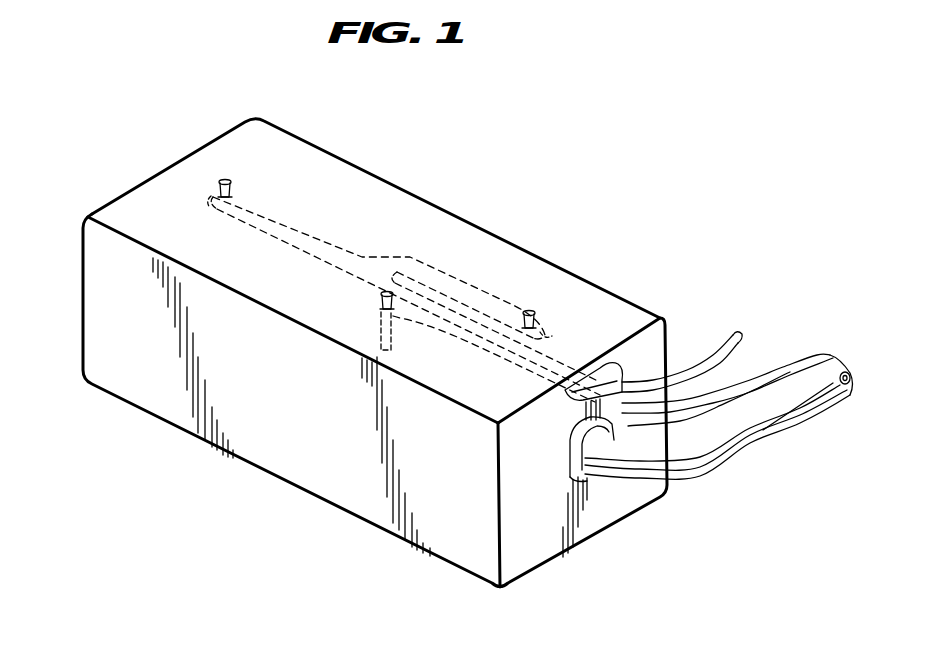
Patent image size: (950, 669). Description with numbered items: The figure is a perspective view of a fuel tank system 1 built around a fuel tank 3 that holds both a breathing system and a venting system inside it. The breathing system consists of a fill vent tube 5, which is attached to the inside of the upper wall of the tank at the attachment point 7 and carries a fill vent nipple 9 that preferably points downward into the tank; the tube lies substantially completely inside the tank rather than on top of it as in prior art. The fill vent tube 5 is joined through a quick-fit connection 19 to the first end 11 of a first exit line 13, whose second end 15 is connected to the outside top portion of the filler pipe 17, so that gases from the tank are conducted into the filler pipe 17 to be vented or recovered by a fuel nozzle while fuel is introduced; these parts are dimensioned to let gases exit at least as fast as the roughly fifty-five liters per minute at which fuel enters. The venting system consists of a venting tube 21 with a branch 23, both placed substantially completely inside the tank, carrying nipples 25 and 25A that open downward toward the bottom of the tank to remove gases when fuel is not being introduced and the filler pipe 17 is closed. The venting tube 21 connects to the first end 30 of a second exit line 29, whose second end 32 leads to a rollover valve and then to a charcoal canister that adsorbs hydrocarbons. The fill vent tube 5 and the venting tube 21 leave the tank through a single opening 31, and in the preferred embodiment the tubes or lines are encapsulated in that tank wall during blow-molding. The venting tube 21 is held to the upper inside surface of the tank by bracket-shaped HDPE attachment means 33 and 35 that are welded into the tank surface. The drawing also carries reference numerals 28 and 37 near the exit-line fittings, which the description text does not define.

The fuel tank system 1 is at (207, 133).
The fuel tank 3 is at (83, 268).
The fill vent tube 5 is at (462, 335).
The attachment point 7 is at (385, 291).
The fill vent nipple 9 is at (380, 353).
The first end of first exit line 11 is at (620, 400).
The first exit line 13 is at (727, 405).
The second end of first exit line 15 is at (812, 353).
The filler pipe 17 is at (820, 418).
The quick-fit connection 19 is at (563, 415).
The venting tube 21 is at (280, 207).
The branch 23 is at (462, 300).
The nipple 25 is at (215, 204).
The nipple 25A is at (542, 332).
The hose mounting line 28 is at (635, 395).
The second exit line 29 is at (708, 356).
The first end of second exit line 30 is at (623, 392).
The opening 31 is at (566, 410).
The second end of second exit line 32 is at (739, 328).
The attachment means 33 is at (230, 182).
The attachment means 35 is at (530, 311).
The upper hose fitting 37 is at (623, 362).